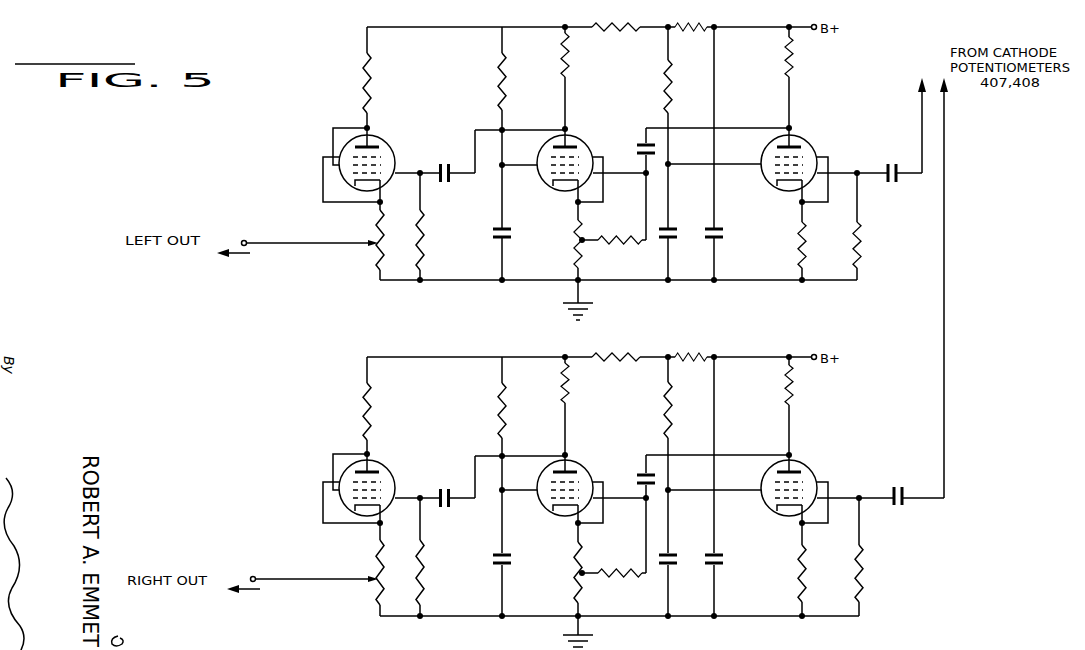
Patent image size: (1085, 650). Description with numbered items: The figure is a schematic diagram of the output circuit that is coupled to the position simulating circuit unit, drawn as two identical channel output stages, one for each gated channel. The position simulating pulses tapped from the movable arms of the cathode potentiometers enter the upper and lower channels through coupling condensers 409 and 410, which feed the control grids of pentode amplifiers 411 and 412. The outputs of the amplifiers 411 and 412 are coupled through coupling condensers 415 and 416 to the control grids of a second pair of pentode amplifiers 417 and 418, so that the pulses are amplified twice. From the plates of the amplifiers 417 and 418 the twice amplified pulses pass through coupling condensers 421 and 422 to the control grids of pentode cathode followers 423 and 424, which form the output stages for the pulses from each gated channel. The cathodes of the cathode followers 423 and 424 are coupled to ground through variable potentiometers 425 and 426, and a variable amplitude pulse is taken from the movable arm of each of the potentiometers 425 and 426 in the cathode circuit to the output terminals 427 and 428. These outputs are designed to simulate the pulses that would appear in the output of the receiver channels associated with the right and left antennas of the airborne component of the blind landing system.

The coupling condenser 409 is at (887, 164).
The coupling condenser 410 is at (896, 488).
The pentode amplifier 411 is at (799, 142).
The pentode amplifier 412 is at (799, 468).
The coupling condenser 415 is at (640, 146).
The coupling condenser 416 is at (640, 477).
The pentode amplifier 417 is at (576, 142).
The pentode amplifier 418 is at (576, 467).
The coupling condenser 421 is at (443, 163).
The coupling condenser 422 is at (443, 489).
The pentode cathode follower 423 is at (379, 143).
The pentode cathode follower 424 is at (379, 468).
The variable potentiometer 425 is at (385, 226).
The variable potentiometer 426 is at (385, 553).
The output terminal 427 is at (244, 240).
The output terminal 428 is at (253, 575).